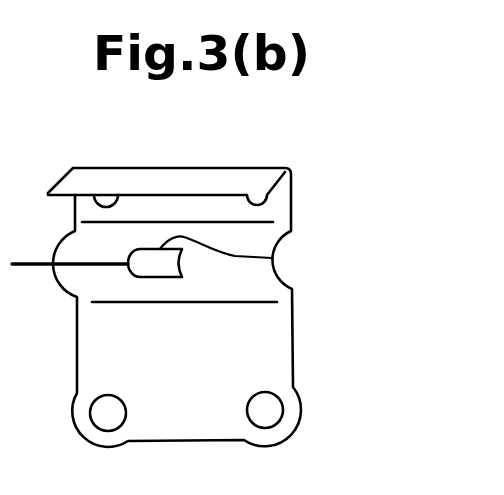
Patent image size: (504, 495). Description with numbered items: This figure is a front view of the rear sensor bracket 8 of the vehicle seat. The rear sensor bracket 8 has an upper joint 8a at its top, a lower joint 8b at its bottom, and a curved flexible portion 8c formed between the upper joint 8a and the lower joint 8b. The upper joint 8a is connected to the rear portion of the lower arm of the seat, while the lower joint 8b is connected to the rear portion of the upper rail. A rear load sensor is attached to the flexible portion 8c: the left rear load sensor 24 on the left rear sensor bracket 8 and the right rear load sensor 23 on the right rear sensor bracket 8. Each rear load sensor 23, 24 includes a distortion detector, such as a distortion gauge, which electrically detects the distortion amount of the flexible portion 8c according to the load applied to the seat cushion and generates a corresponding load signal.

The rear sensor bracket 8 is at (317, 161).
The upper joint 8a is at (291, 200).
The lower joint 8b is at (296, 406).
The curved flexible portion 8c is at (284, 287).
The left rear load sensor 24 is at (199, 256).
The right rear load sensor 23 is at (272, 258).